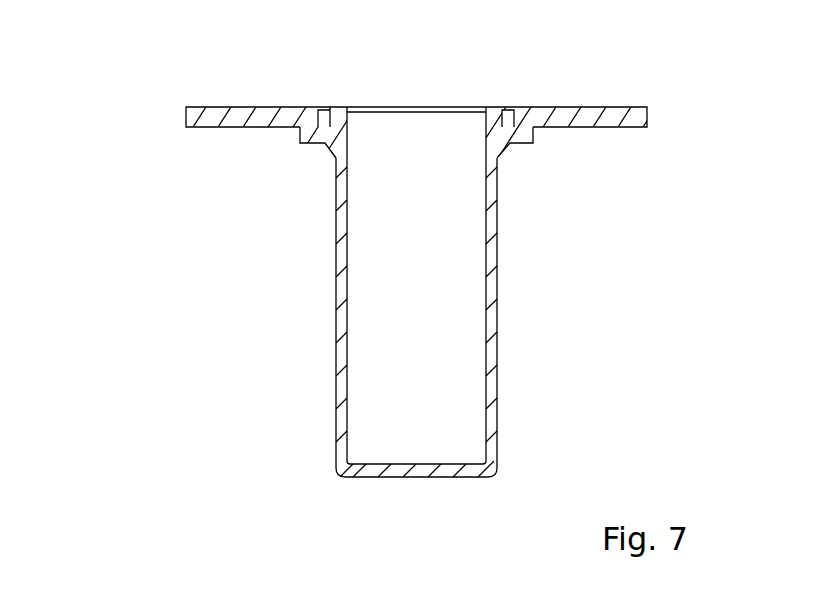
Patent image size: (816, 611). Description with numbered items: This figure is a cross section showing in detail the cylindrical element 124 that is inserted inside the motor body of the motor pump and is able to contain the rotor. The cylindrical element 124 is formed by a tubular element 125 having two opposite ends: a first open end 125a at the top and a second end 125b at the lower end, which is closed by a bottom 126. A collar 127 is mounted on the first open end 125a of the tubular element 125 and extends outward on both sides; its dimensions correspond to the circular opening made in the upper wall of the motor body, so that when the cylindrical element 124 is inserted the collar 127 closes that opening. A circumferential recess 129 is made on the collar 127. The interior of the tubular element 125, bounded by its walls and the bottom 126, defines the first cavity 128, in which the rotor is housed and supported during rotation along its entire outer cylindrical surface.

The cylindrical element 124 is at (148, 275).
The tubular element 125 is at (336, 302).
The first open end 125a is at (336, 190).
The second end 125b is at (332, 460).
The bottom 126 is at (400, 468).
The collar 127 is at (218, 107).
The first cavity 128 is at (445, 296).
The circumferential recess 129 is at (508, 110).